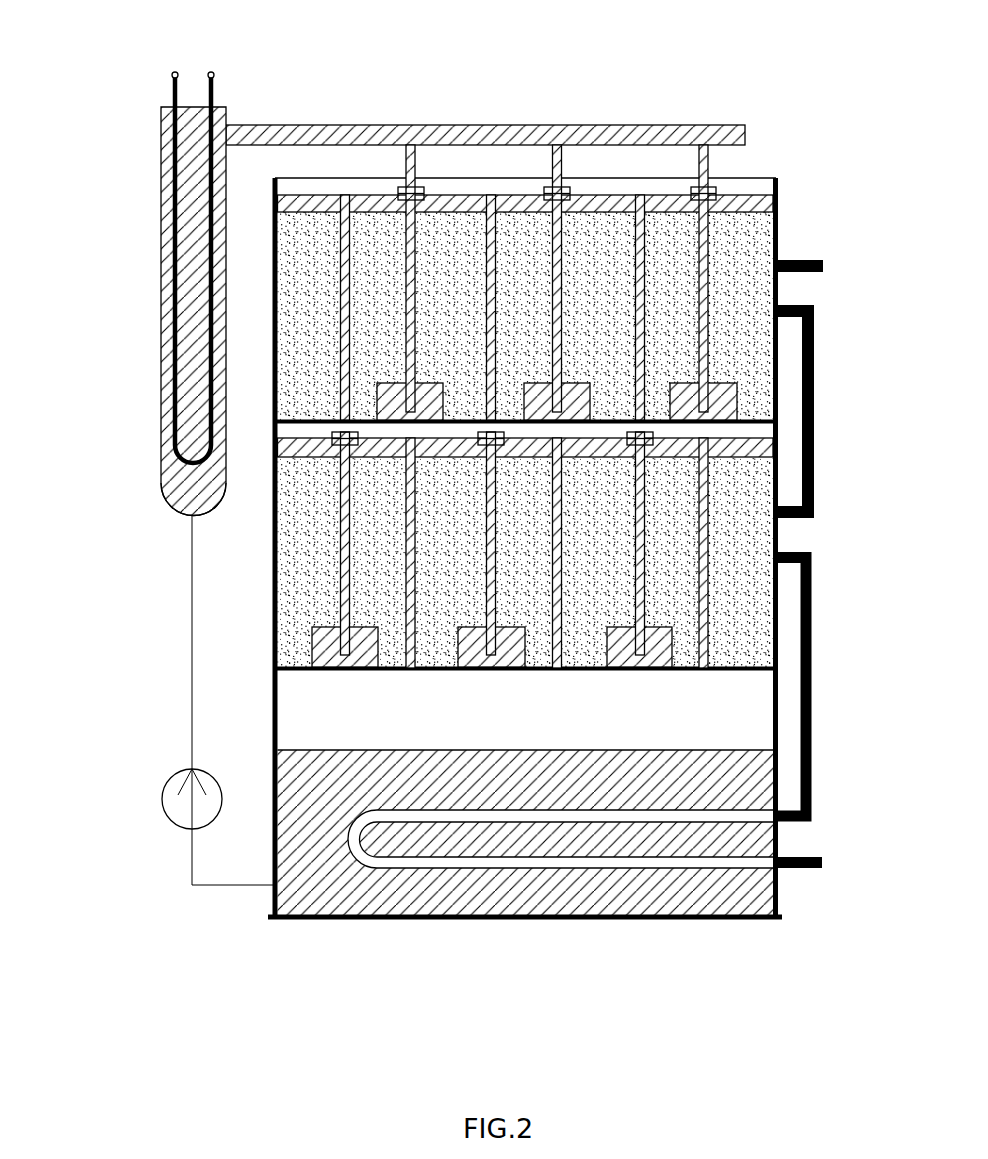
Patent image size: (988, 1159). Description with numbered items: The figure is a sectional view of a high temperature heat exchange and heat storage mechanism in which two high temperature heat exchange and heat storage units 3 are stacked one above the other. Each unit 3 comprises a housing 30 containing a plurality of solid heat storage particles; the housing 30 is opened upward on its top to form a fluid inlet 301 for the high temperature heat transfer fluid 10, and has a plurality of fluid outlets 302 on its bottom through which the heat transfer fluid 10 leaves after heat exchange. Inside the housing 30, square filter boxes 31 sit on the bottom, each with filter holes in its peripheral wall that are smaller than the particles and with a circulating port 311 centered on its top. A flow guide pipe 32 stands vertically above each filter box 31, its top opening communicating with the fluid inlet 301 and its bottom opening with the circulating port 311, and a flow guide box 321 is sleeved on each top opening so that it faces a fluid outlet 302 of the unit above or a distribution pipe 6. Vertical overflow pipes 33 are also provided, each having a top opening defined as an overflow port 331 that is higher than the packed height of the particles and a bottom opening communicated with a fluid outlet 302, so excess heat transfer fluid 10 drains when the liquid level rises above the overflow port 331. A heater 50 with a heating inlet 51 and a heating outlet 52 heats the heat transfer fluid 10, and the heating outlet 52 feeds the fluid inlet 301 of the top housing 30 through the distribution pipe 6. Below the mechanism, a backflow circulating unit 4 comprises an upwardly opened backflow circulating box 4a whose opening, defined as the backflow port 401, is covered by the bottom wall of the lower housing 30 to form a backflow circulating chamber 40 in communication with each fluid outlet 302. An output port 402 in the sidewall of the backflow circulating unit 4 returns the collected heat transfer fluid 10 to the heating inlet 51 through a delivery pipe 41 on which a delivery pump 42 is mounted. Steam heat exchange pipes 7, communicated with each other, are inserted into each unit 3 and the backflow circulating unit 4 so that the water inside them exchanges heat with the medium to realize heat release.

The high temperature heat exchange and heat storage unit 3 is at (795, 237).
The housing 30 is at (810, 360).
The fluid inlet 301 is at (780, 182).
The fluid outlet 302 is at (340, 410).
The filter box 31 is at (378, 390).
The circulating port 311 is at (813, 335).
The flow guide pipe 32 is at (780, 302).
The flow guide box 321 is at (423, 190).
The overflow pipe 33 is at (345, 300).
The overflow port 331 is at (347, 196).
The backflow circulating unit 4 is at (795, 730).
The backflow circulating box 4a is at (778, 833).
The backflow circulating chamber 40 is at (767, 705).
The backflow port 401 is at (275, 688).
The output port 402 is at (273, 886).
The delivery pipe 41 is at (192, 660).
The delivery pump 42 is at (168, 808).
The heater 50 is at (160, 247).
The heating inlet 51 is at (175, 516).
The heating outlet 52 is at (226, 118).
The distribution pipe 6 is at (392, 125).
The steam heat exchange pipe 7 is at (817, 468).
The heat transfer fluid 10 is at (613, 125).